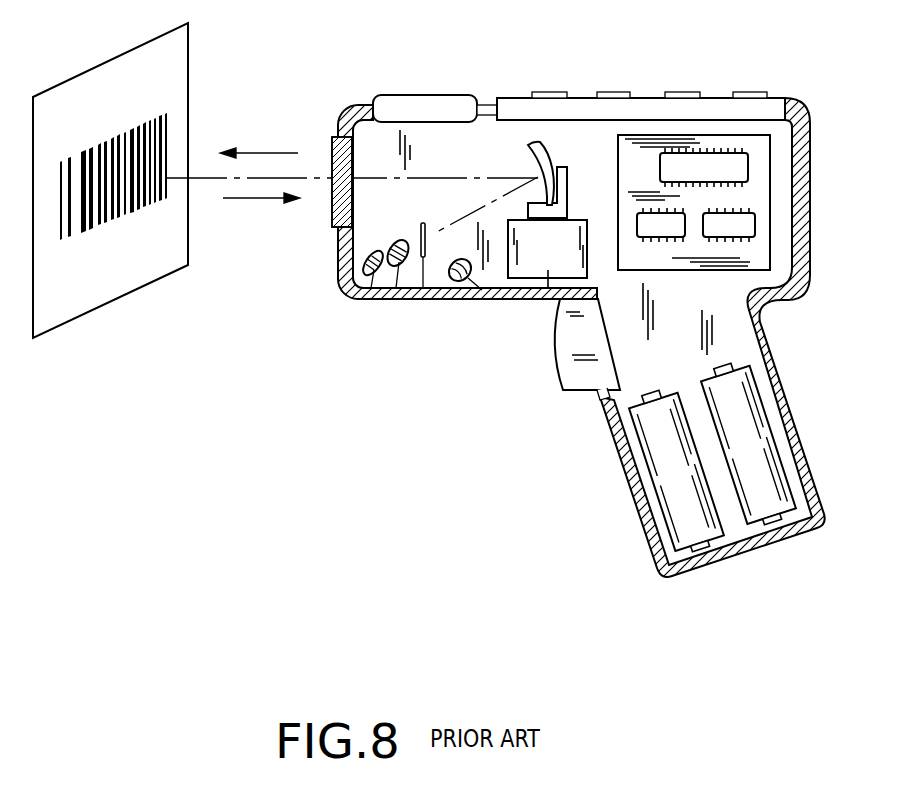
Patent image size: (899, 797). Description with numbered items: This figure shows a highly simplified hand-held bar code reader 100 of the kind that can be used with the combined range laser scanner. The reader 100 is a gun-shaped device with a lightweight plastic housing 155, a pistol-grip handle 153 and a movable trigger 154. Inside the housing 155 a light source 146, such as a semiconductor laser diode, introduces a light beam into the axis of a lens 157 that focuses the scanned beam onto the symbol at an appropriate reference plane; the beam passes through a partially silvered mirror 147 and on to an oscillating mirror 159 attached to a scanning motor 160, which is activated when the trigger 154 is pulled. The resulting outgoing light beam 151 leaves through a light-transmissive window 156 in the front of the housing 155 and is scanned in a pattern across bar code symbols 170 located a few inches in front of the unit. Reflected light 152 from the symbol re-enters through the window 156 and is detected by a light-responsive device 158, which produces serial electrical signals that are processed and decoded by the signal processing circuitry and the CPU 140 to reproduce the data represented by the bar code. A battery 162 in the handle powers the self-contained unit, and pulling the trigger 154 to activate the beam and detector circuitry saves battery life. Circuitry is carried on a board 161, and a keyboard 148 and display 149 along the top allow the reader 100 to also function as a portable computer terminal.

The reader 100 is at (436, 451).
The CPU 140 is at (668, 163).
The light source 146 is at (362, 265).
The partially silvered mirror 147 is at (425, 258).
The keyboard 148 is at (718, 105).
The display 149 is at (397, 95).
The outgoing light beam 151 is at (253, 153).
The reflected light 152 is at (263, 200).
The handle 153 is at (628, 487).
The trigger 154 is at (560, 387).
The housing 155 is at (810, 222).
The window 156 is at (332, 157).
The lens 157 is at (399, 266).
The light-responsive device 158 is at (483, 276).
The oscillating mirror 159 is at (548, 165).
The scanning motor 160 is at (553, 270).
The circuit board 161 is at (770, 168).
The battery 162 is at (748, 368).
The symbols 170 is at (130, 127).